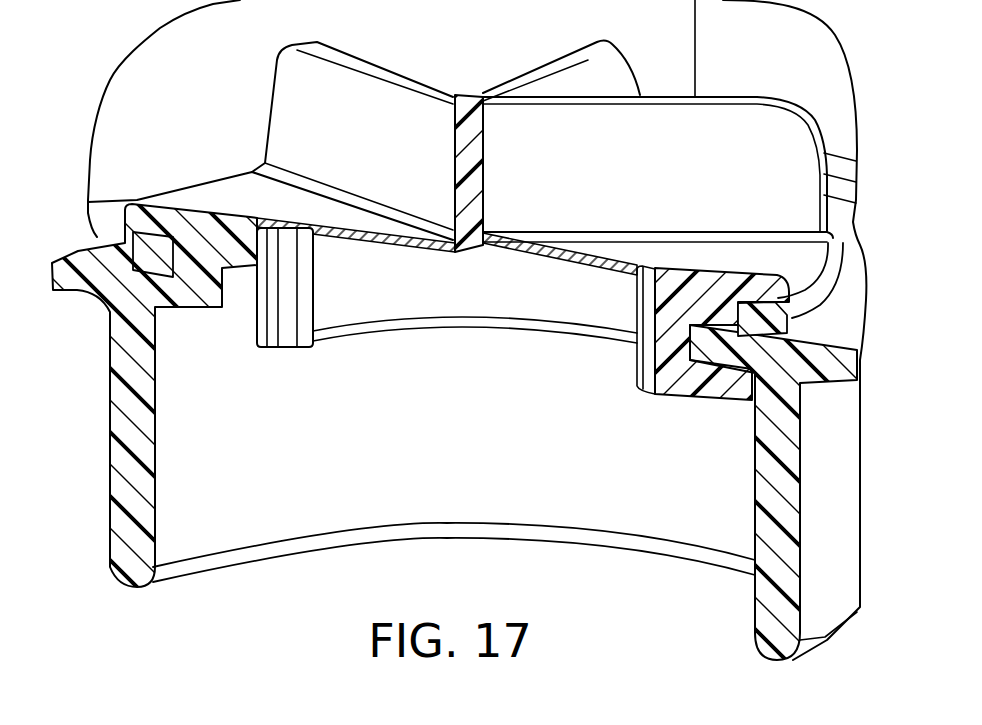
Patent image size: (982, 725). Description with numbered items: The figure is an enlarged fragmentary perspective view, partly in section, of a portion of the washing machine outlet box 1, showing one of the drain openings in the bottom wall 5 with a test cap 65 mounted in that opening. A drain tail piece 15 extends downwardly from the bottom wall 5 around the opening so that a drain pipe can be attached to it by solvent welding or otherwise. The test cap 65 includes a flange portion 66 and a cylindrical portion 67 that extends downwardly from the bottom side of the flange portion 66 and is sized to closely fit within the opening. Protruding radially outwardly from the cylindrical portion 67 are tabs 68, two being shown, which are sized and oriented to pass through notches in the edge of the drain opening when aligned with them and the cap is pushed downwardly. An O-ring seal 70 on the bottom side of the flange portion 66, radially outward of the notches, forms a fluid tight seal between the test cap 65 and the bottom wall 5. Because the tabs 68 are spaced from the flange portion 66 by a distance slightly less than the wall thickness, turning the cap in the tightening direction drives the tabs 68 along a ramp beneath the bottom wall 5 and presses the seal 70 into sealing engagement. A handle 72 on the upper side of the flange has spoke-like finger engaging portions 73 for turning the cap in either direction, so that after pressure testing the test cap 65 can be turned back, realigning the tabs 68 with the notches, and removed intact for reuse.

The box 1 is at (80, 149).
The bottom wall 5 is at (76, 283).
The drain tail piece 15 is at (127, 468).
The test cap 65 is at (242, 153).
The flange portion 66 is at (827, 293).
The cylindrical portion 67 is at (667, 345).
The tabs 68 is at (222, 327).
The O-ring seal 70 is at (765, 325).
The handle 72 is at (474, 68).
The spoke-like finger engaging portions 73 is at (707, 130).